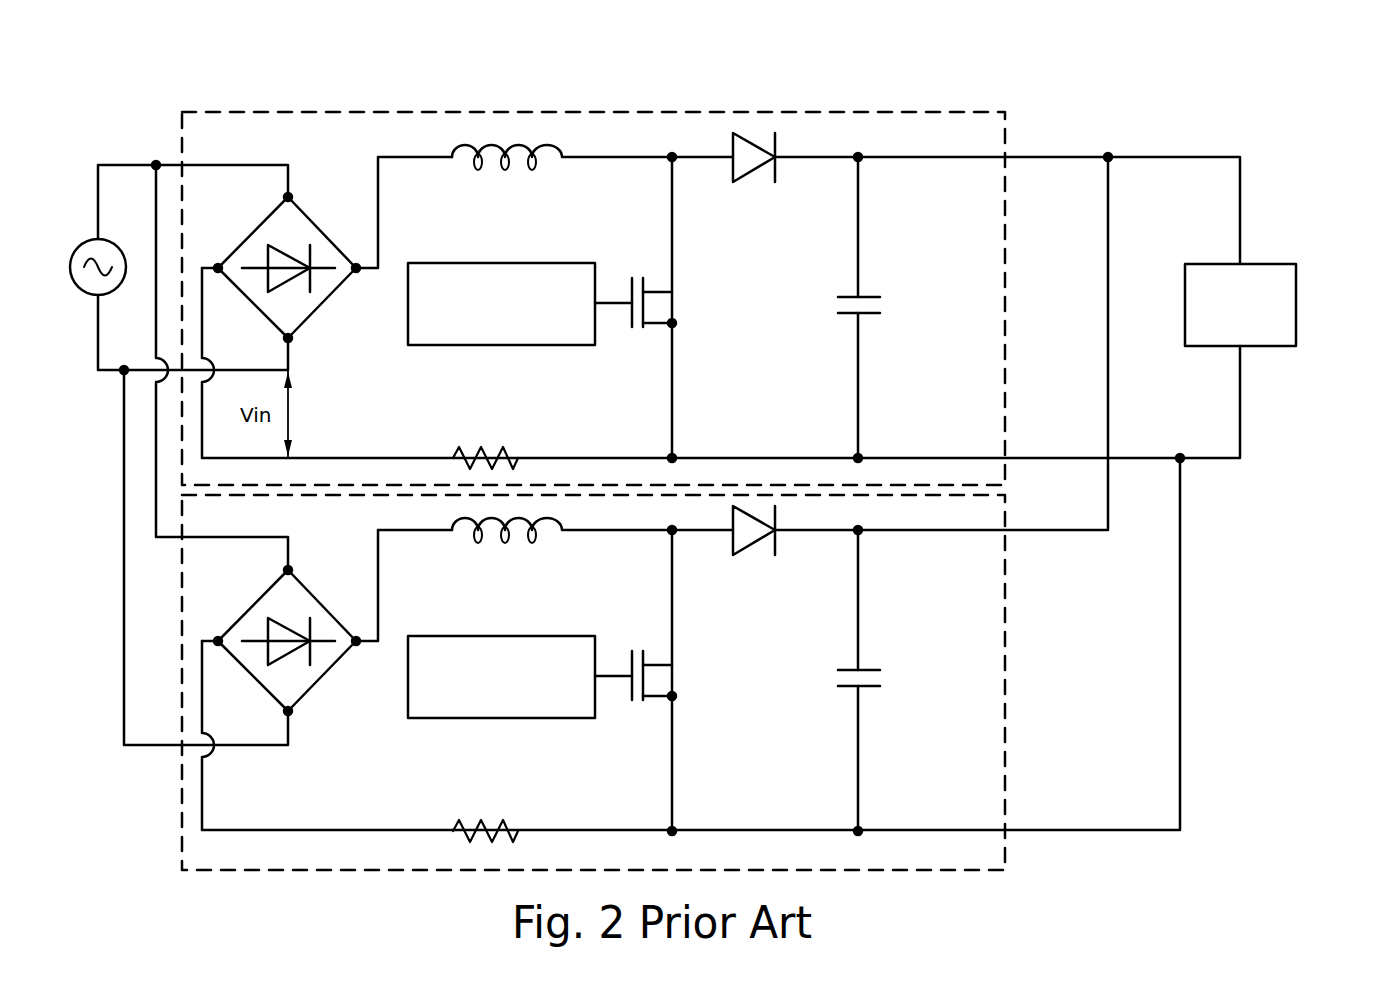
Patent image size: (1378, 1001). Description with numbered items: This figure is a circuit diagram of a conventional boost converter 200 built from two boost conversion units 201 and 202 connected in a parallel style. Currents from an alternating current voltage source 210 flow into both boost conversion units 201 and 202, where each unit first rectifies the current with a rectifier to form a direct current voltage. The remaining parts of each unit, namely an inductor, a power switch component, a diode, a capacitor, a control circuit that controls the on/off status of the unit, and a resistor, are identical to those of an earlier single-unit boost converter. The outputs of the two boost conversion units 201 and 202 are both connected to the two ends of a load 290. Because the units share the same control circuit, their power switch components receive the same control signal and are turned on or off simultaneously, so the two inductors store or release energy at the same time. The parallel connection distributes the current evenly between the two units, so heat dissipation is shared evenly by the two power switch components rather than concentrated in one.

The boost converter 200 is at (1244, 130).
The boost conversion unit 201 is at (865, 112).
The boost conversion unit 202 is at (933, 870).
The alternating current voltage source 210 is at (82, 246).
The load 290 is at (1263, 346).